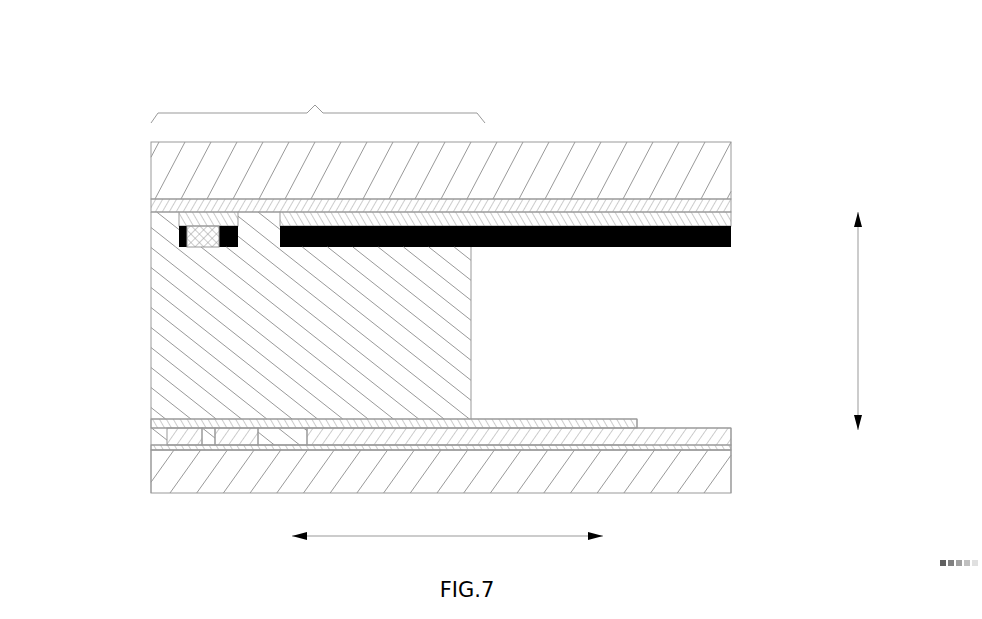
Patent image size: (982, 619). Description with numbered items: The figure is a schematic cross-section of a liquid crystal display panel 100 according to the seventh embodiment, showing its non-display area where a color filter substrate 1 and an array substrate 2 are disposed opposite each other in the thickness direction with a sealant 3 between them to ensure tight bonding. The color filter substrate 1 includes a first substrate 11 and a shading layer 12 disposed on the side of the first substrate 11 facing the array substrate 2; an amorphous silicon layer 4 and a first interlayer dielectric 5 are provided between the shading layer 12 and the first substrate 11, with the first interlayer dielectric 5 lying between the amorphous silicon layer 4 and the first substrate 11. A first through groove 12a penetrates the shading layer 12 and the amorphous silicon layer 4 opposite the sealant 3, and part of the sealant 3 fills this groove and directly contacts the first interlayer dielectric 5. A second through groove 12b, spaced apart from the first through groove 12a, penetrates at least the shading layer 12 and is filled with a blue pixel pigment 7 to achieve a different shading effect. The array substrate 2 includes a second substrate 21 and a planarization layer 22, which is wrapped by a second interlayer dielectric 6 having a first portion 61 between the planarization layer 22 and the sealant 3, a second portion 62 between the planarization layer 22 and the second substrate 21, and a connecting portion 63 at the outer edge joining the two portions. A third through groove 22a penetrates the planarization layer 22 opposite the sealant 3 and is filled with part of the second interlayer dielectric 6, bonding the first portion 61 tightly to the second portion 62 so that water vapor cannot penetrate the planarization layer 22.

The liquid crystal display panel 100 is at (745, 116).
The color filter substrate 1 is at (798, 155).
The first substrate 11 is at (706, 172).
The shading layer 12 is at (728, 232).
The first through groove 12a is at (250, 225).
The second through groove 12b is at (208, 236).
The blue pixel pigment 7 is at (183, 243).
The amorphous silicon layer 4 is at (605, 247).
The first interlayer dielectric 5 is at (540, 247).
The sealant 3 is at (220, 328).
The array substrate 2 is at (797, 422).
The planarization layer 22 is at (720, 435).
The third through groove 22a is at (200, 448).
The second substrate 21 is at (717, 471).
The second interlayer dielectric 6 is at (97, 387).
The first portion 61 is at (228, 423).
The connecting portion 63 is at (160, 437).
The second portion 62 is at (185, 448).